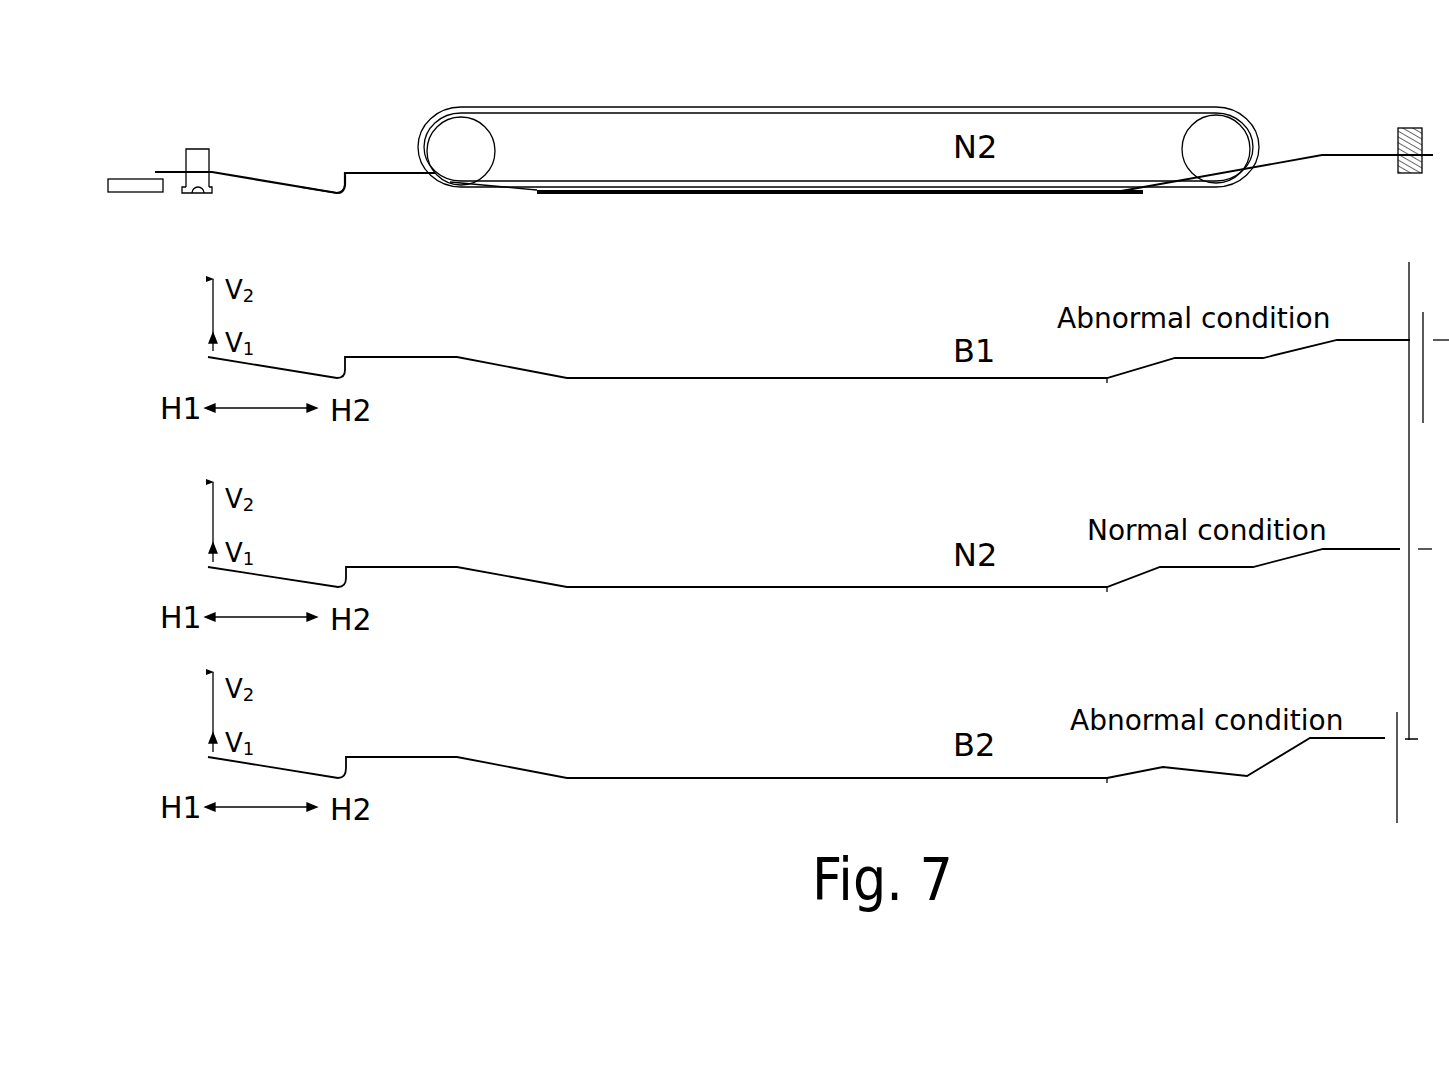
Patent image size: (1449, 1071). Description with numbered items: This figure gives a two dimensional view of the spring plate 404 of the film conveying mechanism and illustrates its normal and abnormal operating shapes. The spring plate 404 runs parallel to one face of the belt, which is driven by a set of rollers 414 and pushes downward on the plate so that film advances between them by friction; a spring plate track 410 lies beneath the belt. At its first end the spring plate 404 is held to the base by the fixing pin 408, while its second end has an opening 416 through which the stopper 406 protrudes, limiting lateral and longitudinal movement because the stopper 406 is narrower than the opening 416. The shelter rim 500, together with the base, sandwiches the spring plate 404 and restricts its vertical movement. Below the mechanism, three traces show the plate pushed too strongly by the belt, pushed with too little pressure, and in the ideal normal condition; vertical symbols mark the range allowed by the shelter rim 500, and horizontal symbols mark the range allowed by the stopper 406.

The shelter rim 500 is at (115, 178).
The stopper 406 is at (202, 149).
The opening 416 is at (172, 180).
The spring plate 404 is at (327, 197).
The rollers 414 is at (467, 162).
The spring plate track 410 is at (1060, 197).
The fixing pin 408 is at (1407, 128).